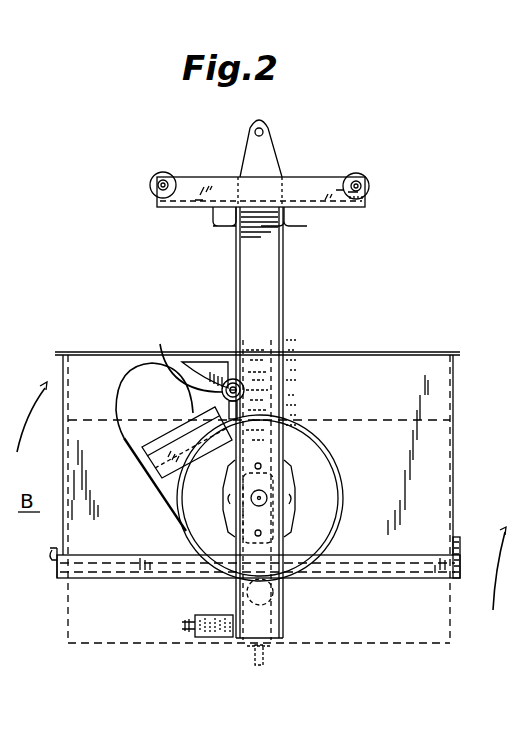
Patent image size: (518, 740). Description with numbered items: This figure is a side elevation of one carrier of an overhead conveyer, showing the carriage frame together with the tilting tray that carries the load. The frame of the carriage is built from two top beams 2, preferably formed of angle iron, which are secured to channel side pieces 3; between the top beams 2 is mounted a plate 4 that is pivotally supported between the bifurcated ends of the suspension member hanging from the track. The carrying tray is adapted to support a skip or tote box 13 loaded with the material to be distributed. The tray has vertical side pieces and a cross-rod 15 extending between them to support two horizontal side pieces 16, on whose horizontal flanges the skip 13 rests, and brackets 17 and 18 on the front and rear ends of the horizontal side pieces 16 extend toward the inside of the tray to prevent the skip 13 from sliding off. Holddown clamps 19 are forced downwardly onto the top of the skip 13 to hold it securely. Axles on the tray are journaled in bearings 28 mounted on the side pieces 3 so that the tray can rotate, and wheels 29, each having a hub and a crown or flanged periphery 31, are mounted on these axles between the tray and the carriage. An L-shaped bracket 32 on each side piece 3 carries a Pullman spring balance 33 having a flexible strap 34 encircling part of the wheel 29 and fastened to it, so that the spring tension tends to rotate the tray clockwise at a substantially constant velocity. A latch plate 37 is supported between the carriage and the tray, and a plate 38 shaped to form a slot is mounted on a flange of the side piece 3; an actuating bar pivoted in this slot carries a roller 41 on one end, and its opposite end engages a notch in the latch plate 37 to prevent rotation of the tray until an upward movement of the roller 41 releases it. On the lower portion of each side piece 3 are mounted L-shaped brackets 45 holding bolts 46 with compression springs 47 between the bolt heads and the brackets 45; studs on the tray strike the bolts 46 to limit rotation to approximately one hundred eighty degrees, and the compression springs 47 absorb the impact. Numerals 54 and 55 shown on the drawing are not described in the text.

The top beams 2 is at (228, 226).
The channel side pieces 3 is at (268, 292).
The plate 4 is at (265, 163).
The skip or tote box 13 is at (437, 400).
The cross-rod 15 is at (284, 598).
The horizontal side pieces 16 is at (420, 577).
The bracket 17 is at (461, 549).
The bracket 18 is at (52, 553).
The holddown clamps 19 is at (262, 348).
The bearings 28 is at (286, 503).
The wheels 29 is at (322, 493).
The crown or flanged periphery 31 is at (330, 458).
The L-shaped bracket 32 is at (160, 462).
The Pullman spring balance 33 is at (130, 388).
The flexible strap 34 is at (172, 512).
The latch plate 37 is at (203, 368).
The plate 38 is at (232, 378).
The roller 41 is at (162, 352).
The L-shaped brackets 45 is at (226, 640).
The bolts 46 is at (188, 636).
The compression springs 47 is at (220, 615).
The roller 54 is at (160, 173).
The top bar 55 is at (320, 190).